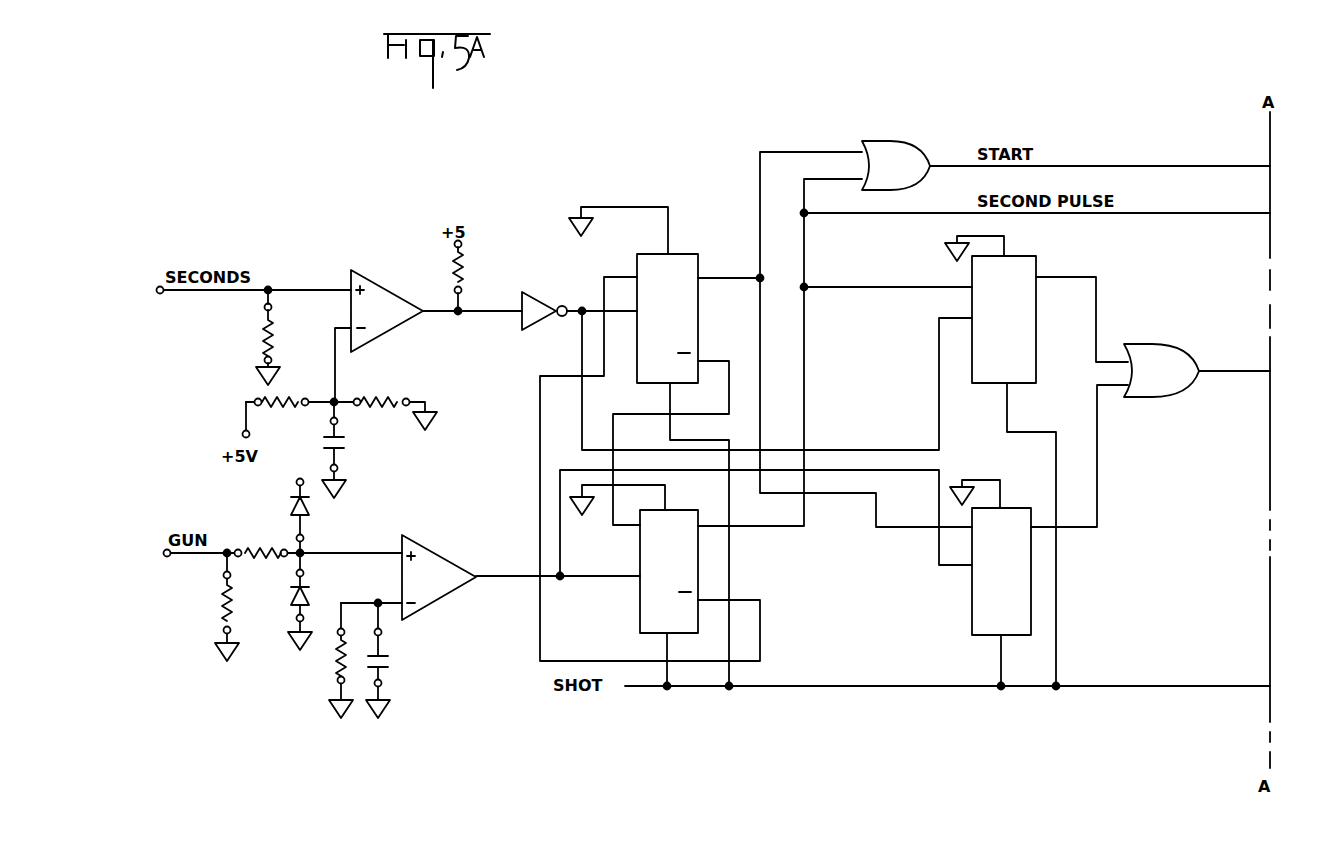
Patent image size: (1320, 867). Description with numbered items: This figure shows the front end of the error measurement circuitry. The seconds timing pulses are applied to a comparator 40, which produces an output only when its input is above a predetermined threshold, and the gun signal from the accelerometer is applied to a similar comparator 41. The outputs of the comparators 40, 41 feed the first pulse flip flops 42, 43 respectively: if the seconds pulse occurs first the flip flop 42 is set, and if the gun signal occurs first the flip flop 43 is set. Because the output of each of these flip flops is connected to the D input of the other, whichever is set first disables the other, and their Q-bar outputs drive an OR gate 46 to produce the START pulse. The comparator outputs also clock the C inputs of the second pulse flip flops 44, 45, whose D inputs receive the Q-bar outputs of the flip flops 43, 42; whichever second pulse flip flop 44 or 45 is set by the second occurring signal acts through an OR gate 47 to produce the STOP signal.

The comparator 40 is at (388, 290).
The comparator 41 is at (432, 551).
The first pulse flip flop 42 is at (685, 257).
The first pulse flip flop 43 is at (677, 508).
The second pulse flip flop 44 is at (1018, 257).
The second pulse flip flop 45 is at (1005, 507).
The OR gate 46 is at (912, 147).
The OR gate 47 is at (1165, 343).